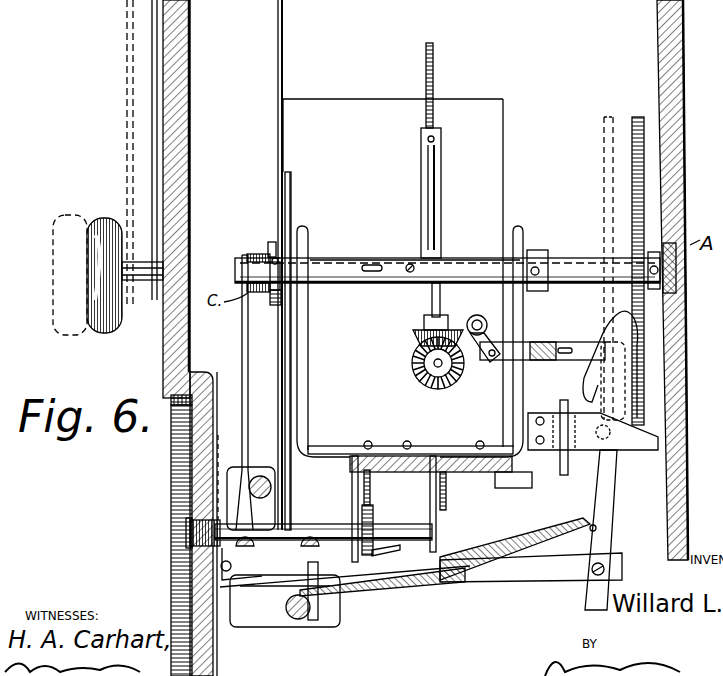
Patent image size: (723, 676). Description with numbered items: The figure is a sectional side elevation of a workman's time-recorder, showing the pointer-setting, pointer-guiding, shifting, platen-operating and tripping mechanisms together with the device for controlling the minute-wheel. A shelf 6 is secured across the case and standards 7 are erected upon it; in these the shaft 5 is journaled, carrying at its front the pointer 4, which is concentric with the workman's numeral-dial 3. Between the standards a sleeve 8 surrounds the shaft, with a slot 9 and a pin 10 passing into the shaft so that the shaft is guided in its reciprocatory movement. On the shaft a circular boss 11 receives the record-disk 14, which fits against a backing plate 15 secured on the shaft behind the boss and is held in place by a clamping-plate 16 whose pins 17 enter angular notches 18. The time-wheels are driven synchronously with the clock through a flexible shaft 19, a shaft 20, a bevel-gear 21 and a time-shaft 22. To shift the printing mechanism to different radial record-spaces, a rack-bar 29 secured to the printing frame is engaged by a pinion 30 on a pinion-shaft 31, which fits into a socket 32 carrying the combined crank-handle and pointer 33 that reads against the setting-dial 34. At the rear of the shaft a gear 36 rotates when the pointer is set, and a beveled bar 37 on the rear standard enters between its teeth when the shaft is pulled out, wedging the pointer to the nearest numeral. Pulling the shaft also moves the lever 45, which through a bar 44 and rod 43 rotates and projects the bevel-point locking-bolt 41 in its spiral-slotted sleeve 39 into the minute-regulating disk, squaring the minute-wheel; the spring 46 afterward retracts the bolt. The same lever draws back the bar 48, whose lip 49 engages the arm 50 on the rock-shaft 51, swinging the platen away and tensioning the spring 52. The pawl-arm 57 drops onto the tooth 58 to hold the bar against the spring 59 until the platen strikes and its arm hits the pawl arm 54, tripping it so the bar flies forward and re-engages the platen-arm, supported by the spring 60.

The workman's numeral-dial 3 is at (135, 338).
The pointer 4 is at (321, 278).
The shaft 5 is at (432, 263).
The shelf 6 is at (441, 483).
The standards 7 is at (420, 328).
The sleeve 8 is at (415, 249).
The slot 9 is at (372, 264).
The pin 10 is at (410, 263).
The circular boss 11 is at (264, 290).
The record-disk 14 is at (266, 265).
The plate 15 is at (289, 190).
The clamping-plate 16 is at (278, 213).
The pins 17 is at (273, 259).
The angular notches 18 is at (272, 260).
The flexible shaft 19 is at (441, 150).
The shaft 20 is at (432, 296).
The bevel-gear 21 is at (422, 363).
The time-shaft 22 is at (434, 367).
The rack-bar 29 is at (394, 509).
The pinion 30 is at (379, 512).
The pinion-shaft 31 is at (323, 523).
The socket 32 is at (221, 477).
The combined crank-handle and pointer 33 is at (236, 562).
The setting-dial 34 is at (190, 502).
The gear 36 is at (593, 258).
The bar 37 is at (593, 437).
The sleeve 39 is at (478, 316).
The bevel-point locking-bolt 41 is at (483, 356).
The rod 43 is at (495, 364).
The bar 44 is at (542, 341).
The lever 45 is at (613, 530).
The spring 46 is at (595, 365).
The bar 48 is at (531, 577).
The lip 49 is at (236, 612).
The arm 50 is at (253, 392).
The rock-shaft 51 is at (276, 351).
The spring 52 is at (267, 486).
The arm of the pivoted pawl 54 is at (262, 578).
The pawl-arm 57 is at (395, 548).
The tooth 58 is at (345, 588).
The spring 59 is at (518, 549).
The spring 60 is at (280, 607).